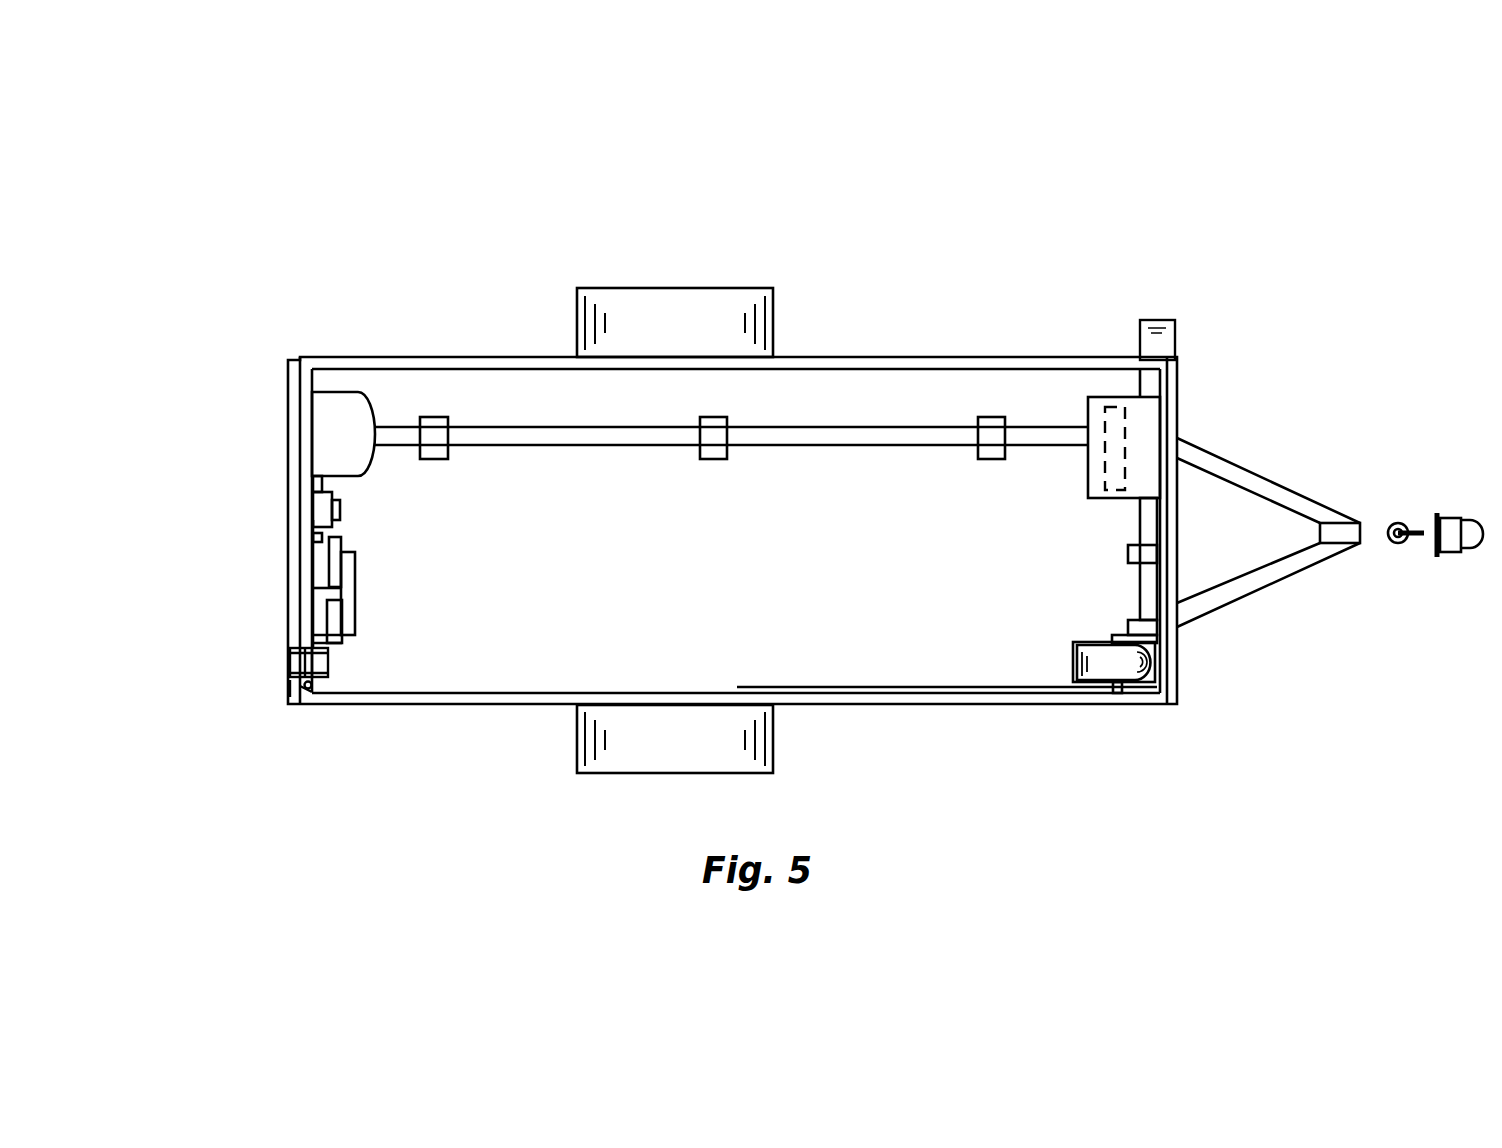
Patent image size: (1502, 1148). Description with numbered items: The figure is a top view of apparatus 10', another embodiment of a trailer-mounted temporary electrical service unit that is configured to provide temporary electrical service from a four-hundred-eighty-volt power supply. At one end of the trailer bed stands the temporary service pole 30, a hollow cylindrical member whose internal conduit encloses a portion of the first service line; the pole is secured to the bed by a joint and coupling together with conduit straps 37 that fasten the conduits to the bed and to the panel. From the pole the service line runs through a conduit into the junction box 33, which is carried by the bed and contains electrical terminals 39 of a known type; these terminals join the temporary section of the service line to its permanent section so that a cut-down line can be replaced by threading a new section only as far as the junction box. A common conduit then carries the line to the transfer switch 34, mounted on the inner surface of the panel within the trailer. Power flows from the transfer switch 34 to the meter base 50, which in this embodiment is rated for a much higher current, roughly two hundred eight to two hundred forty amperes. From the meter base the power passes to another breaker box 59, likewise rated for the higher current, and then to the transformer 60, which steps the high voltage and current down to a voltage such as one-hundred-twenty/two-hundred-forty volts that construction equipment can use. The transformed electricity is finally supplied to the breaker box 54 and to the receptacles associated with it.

The apparatus 10' is at (814, 453).
The transfer switch 34 is at (343, 412).
The conduit straps 37 is at (1127, 553).
The electrical terminals 39 is at (1120, 405).
The junction box 33 is at (1140, 413).
The temporary service pole 30 is at (1128, 663).
The meter base 50 is at (320, 509).
The breaker box 59 is at (320, 560).
The transformer 60 is at (320, 593).
The breaker box 54 is at (322, 628).